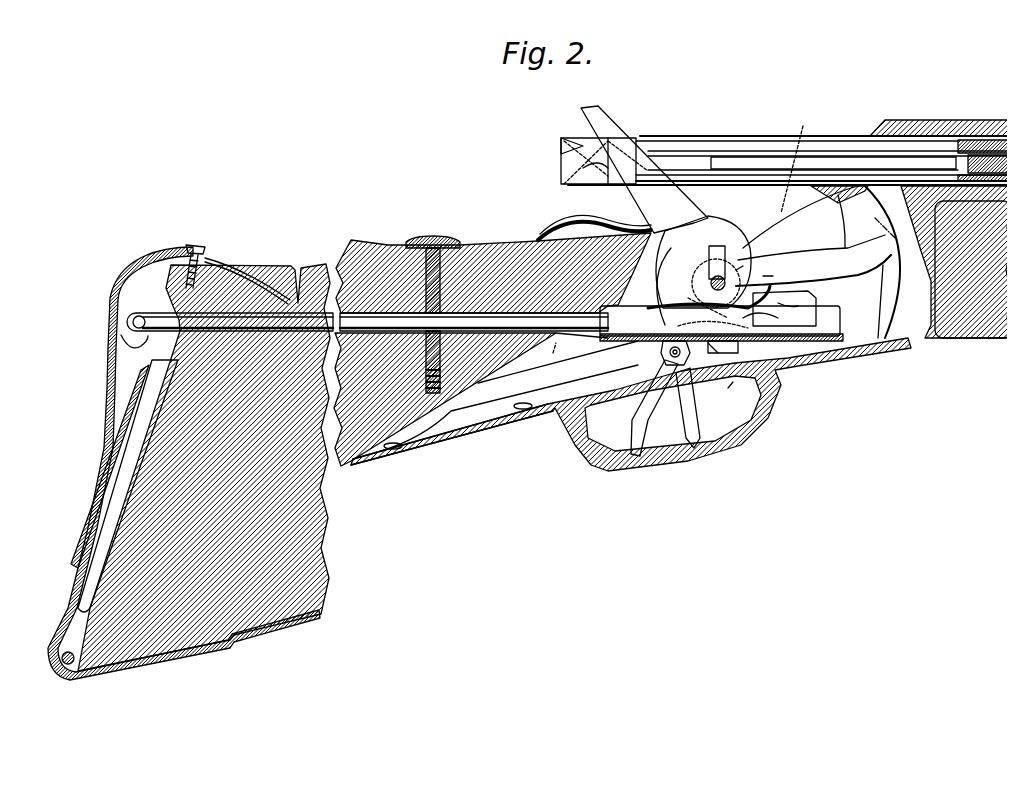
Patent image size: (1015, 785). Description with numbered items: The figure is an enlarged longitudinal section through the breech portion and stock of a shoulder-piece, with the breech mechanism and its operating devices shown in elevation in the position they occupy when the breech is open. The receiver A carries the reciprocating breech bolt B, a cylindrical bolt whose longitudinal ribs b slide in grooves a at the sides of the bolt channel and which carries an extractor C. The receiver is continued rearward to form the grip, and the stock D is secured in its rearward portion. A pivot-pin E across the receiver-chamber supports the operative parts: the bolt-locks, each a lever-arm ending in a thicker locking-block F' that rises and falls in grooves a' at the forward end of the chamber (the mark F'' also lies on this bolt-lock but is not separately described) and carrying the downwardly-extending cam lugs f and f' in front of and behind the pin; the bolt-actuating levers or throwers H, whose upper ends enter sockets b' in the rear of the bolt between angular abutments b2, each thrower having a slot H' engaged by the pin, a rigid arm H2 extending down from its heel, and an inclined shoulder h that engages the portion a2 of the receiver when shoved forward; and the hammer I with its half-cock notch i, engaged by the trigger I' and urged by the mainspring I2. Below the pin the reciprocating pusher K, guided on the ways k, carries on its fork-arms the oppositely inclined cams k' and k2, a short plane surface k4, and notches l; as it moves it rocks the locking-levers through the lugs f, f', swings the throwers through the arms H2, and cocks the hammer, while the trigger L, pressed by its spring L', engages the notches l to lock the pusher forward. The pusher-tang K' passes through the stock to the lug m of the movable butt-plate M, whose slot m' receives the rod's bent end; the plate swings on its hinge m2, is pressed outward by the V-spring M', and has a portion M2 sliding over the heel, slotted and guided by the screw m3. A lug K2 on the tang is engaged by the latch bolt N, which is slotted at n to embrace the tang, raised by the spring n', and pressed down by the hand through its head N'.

The receiver A is at (912, 122).
The grooves a is at (507, 396).
The grooves a' is at (850, 221).
The portion of the receiver a2 is at (802, 216).
The breech bolt B is at (784, 158).
The longitudinal ribs b is at (818, 160).
The sockets b' is at (586, 150).
The angular abutments b2 is at (608, 134).
The extractor C is at (794, 162).
The stock D is at (308, 566).
The pivot-pin E is at (507, 396).
The bolt-locking block F' is at (813, 260).
The breech block face F'' is at (883, 262).
The forward cam lug f is at (788, 304).
The rear cam lug f' is at (707, 300).
The bolt-actuating lever H is at (675, 212).
The slot H' is at (735, 247).
The rigid arm H2 is at (728, 351).
The inclined shoulder h is at (595, 171).
The hammer I is at (625, 217).
The trigger I' is at (774, 270).
The mainspring I2 is at (547, 355).
The pusher K is at (507, 396).
The pusher-tang K' is at (507, 396).
The lug K2 is at (556, 355).
The ways k is at (794, 311).
The forward cam k' is at (799, 312).
The rear cam k2 is at (745, 275).
The plane surface k4 is at (731, 384).
The locking trigger L is at (660, 398).
The trigger-spring L' is at (543, 396).
The notches l is at (710, 320).
The half-cock notch i is at (744, 341).
The butt-plate M is at (507, 396).
The spring M' is at (507, 396).
The heel portion M2 is at (212, 256).
The lug m is at (367, 307).
The slot m' is at (134, 348).
The hinge m2 is at (507, 396).
The screw m3 is at (194, 258).
The latch bolt N is at (507, 396).
The head N' is at (507, 396).
The slot n is at (444, 313).
The spring n' is at (452, 426).